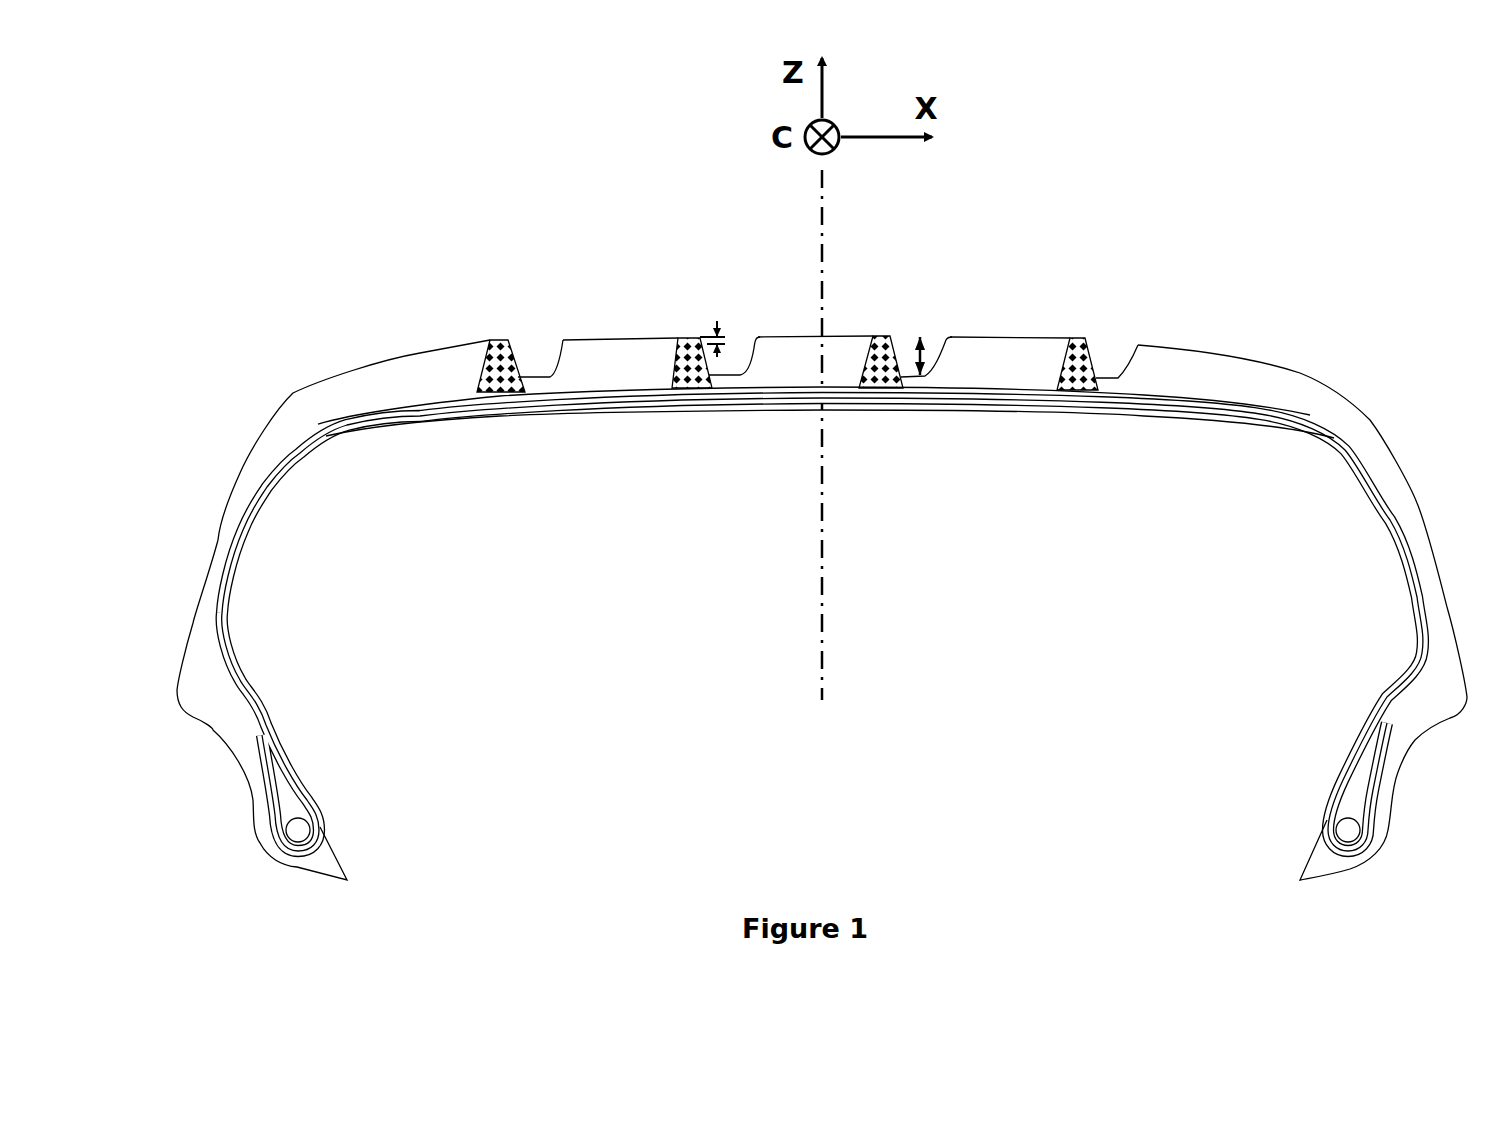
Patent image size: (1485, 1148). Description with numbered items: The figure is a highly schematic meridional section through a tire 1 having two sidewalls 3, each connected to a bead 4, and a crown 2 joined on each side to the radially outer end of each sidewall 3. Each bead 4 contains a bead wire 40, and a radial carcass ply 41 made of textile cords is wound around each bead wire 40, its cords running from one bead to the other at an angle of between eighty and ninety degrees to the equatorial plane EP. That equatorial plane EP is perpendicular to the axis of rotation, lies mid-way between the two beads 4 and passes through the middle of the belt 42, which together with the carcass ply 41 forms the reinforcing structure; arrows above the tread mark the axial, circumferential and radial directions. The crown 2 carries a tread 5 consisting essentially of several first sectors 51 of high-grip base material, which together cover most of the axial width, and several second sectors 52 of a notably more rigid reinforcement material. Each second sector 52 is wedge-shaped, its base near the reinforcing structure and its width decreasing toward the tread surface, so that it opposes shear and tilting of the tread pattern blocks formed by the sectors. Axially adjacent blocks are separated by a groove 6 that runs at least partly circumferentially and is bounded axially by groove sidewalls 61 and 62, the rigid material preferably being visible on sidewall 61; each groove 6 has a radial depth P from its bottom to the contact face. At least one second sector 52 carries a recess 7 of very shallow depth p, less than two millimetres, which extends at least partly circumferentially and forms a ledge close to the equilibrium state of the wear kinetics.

The tire 1 is at (300, 300).
The crown 2 is at (268, 407).
The sidewall 3 is at (215, 490).
The bead 4 is at (228, 807).
The bead wire 40 is at (298, 830).
The carcass ply 41 is at (258, 705).
The belt 42 is at (1282, 407).
The tread 5 is at (1226, 305).
The first sector 51 is at (427, 375).
The second sector 52 is at (498, 372).
The groove 6 is at (537, 362).
The groove sidewall 61 is at (513, 365).
The groove sidewall 62 is at (560, 360).
The recess 7 is at (501, 342).
The depth of the groove P is at (920, 355).
The depth of the recess p is at (715, 319).
The equatorial plane EP is at (857, 435).